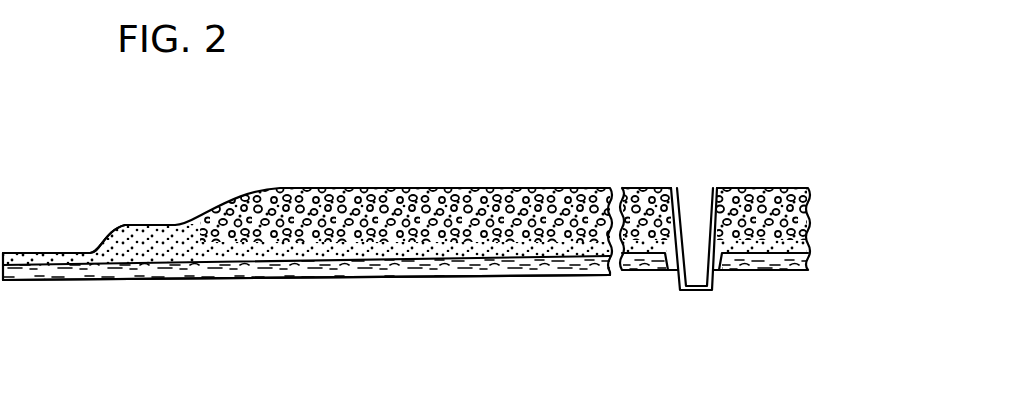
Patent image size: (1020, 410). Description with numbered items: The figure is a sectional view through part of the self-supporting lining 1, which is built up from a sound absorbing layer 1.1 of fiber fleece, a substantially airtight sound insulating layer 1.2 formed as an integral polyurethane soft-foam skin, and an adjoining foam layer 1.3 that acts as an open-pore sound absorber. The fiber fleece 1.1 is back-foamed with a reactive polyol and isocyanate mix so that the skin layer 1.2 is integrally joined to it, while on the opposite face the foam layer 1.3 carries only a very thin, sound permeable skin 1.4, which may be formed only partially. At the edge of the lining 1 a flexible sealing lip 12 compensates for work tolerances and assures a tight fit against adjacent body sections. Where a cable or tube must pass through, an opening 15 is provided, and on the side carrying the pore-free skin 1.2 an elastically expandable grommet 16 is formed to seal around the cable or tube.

The lining 1 is at (520, 162).
The sound absorbing layer 1.1 is at (207, 268).
The sound insulating layer 1.2 is at (413, 257).
The foam layer 1.3 is at (338, 218).
The thin skin 1.4 is at (767, 188).
The flexible sealing lip 12 is at (61, 260).
The opening 15 is at (689, 205).
The elastically expandable grommet 16 is at (677, 290).